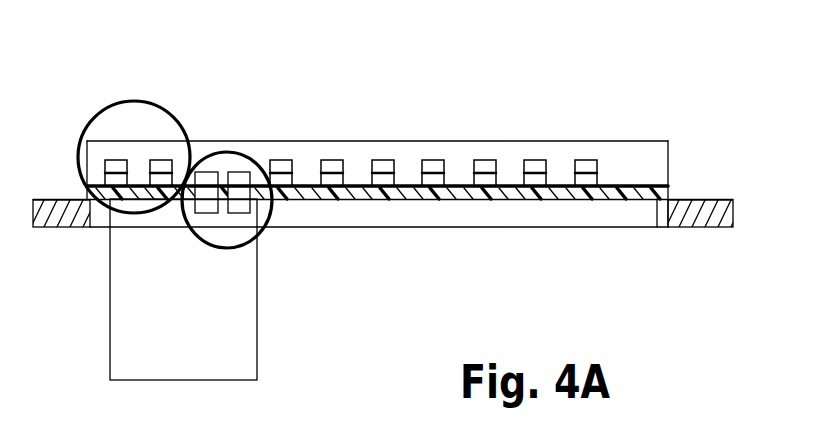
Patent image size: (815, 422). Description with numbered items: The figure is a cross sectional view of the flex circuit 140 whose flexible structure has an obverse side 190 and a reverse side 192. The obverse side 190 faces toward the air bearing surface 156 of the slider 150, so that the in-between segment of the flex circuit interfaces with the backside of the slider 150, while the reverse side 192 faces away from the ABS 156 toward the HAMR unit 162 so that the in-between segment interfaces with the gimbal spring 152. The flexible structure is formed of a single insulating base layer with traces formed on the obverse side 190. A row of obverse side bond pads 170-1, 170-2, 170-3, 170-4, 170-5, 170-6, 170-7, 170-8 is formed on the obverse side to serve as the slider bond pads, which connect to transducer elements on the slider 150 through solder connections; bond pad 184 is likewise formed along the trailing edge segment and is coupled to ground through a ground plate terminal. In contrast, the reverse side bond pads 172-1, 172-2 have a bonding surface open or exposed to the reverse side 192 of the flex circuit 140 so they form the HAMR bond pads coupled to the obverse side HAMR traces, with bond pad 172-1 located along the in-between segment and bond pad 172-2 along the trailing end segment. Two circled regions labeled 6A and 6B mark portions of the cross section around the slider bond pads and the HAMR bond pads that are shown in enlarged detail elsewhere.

The flex circuit 140 is at (652, 173).
The slider 150 is at (470, 136).
The gimbal spring 152 is at (705, 200).
The air bearing surface 156 is at (552, 140).
The HAMR unit 162 is at (185, 328).
The slider bond pad 170-1 is at (585, 181).
The slider bond pad 170-2 is at (534, 181).
The slider bond pad 170-3 is at (484, 181).
The slider bond pad 170-4 is at (433, 181).
The slider bond pad 170-5 is at (383, 181).
The slider bond pad 170-6 is at (332, 181).
The slider bond pad 170-7 is at (160, 181).
The slider bond pad 170-8 is at (113, 182).
The HAMR bond pad 172-1 is at (208, 177).
The HAMR bond pad 172-2 is at (237, 177).
The ground bond pad 184 is at (283, 181).
The obverse side 190 is at (660, 187).
The reverse side 192 is at (657, 227).
The detail view circle 6A is at (147, 100).
The detail view circle 6B is at (240, 152).